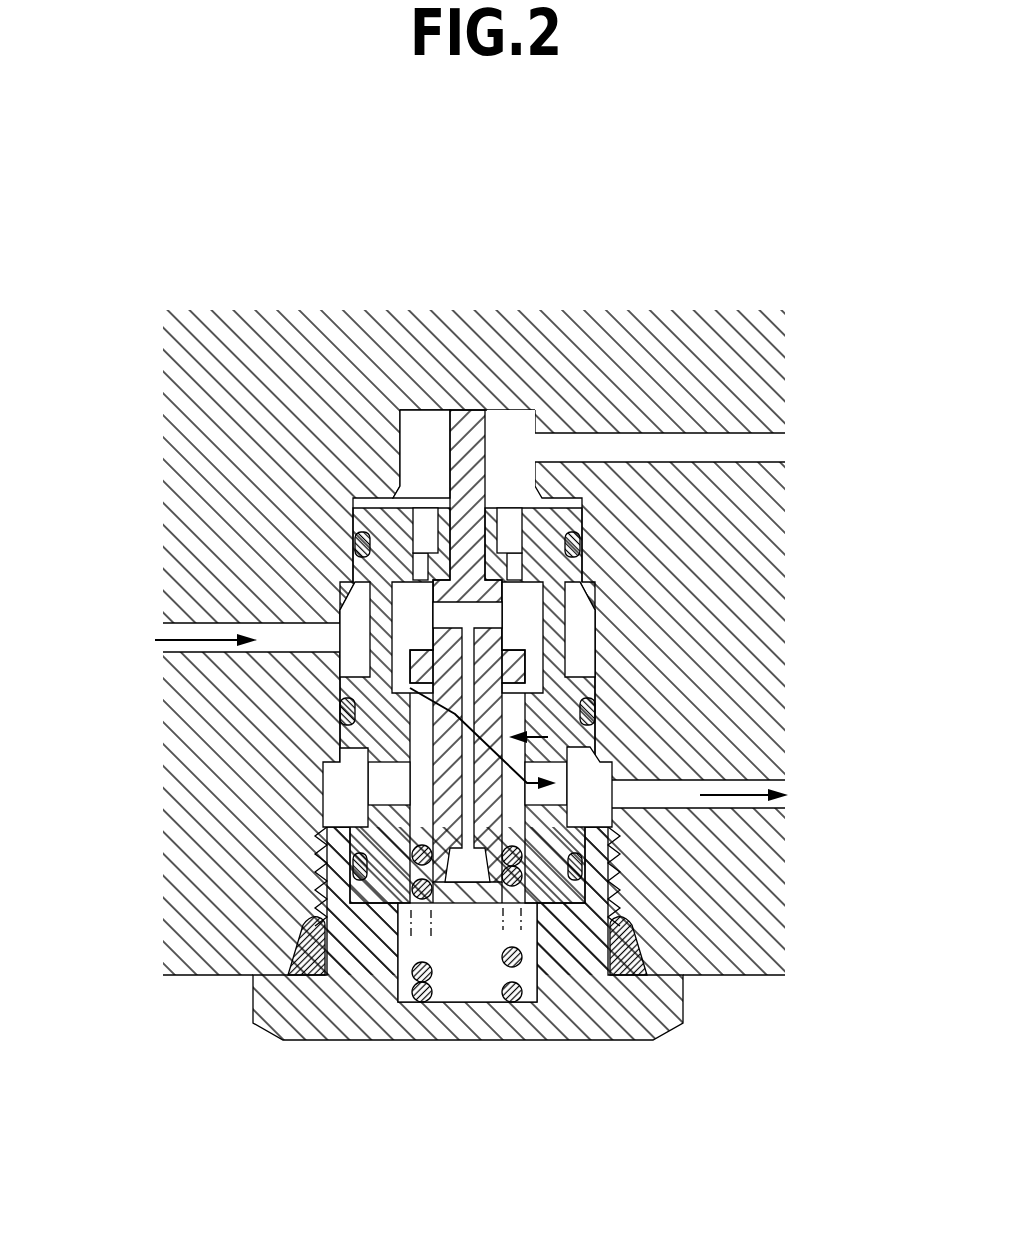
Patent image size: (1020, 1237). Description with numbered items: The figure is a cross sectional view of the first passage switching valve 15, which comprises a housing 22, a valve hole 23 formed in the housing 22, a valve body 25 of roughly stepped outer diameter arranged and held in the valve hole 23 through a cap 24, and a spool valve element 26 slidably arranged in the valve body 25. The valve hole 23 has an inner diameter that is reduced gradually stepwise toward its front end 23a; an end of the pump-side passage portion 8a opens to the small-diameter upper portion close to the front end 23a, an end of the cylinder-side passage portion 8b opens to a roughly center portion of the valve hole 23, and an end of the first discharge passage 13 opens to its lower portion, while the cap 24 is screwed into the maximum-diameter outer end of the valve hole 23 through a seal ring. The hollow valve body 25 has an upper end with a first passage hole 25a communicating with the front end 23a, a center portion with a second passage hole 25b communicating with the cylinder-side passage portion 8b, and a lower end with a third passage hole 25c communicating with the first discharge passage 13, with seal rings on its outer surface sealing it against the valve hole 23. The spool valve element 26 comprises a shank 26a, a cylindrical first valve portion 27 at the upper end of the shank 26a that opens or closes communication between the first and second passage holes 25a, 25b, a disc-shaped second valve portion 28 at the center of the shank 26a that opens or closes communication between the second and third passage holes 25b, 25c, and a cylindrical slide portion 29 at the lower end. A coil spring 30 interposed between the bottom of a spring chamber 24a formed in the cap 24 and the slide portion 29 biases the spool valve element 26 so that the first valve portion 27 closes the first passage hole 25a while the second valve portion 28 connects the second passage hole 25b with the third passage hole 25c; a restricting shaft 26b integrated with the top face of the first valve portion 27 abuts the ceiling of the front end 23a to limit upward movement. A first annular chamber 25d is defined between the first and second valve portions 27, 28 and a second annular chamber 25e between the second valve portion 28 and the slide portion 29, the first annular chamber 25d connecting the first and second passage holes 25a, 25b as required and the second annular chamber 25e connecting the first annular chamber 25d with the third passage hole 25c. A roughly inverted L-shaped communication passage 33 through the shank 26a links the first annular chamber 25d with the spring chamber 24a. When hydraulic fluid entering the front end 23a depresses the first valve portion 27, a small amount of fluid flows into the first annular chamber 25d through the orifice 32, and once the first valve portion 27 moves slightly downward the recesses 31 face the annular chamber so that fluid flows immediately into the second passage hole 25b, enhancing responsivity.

The first passage switching valve 15 is at (594, 246).
The housing 22 is at (727, 376).
The valve hole 23 is at (580, 692).
The front end 23a is at (430, 410).
The cap 24 is at (668, 1012).
The spring chamber 24a is at (403, 943).
The valve body 25 is at (627, 917).
The first passage hole 25a is at (512, 534).
The second passage hole 25b is at (372, 612).
The third passage hole 25c is at (592, 822).
The first annular chamber 25d is at (575, 632).
The second annular chamber 25e is at (418, 772).
The spool valve element 26 is at (548, 741).
The shank 26a is at (437, 729).
The restricting shaft 26b is at (458, 467).
The first valve portion 27 is at (522, 627).
The second valve portion 28 is at (414, 696).
The slide portion 29 is at (575, 883).
The coil spring 30 is at (510, 960).
The recesses 31 is at (425, 517).
The orifice 32 is at (430, 560).
The communication passage 33 is at (352, 838).
The pump-side passage portion 8a is at (708, 440).
The cylinder-side passage portion 8b is at (332, 651).
The first discharge passage 13 is at (553, 795).